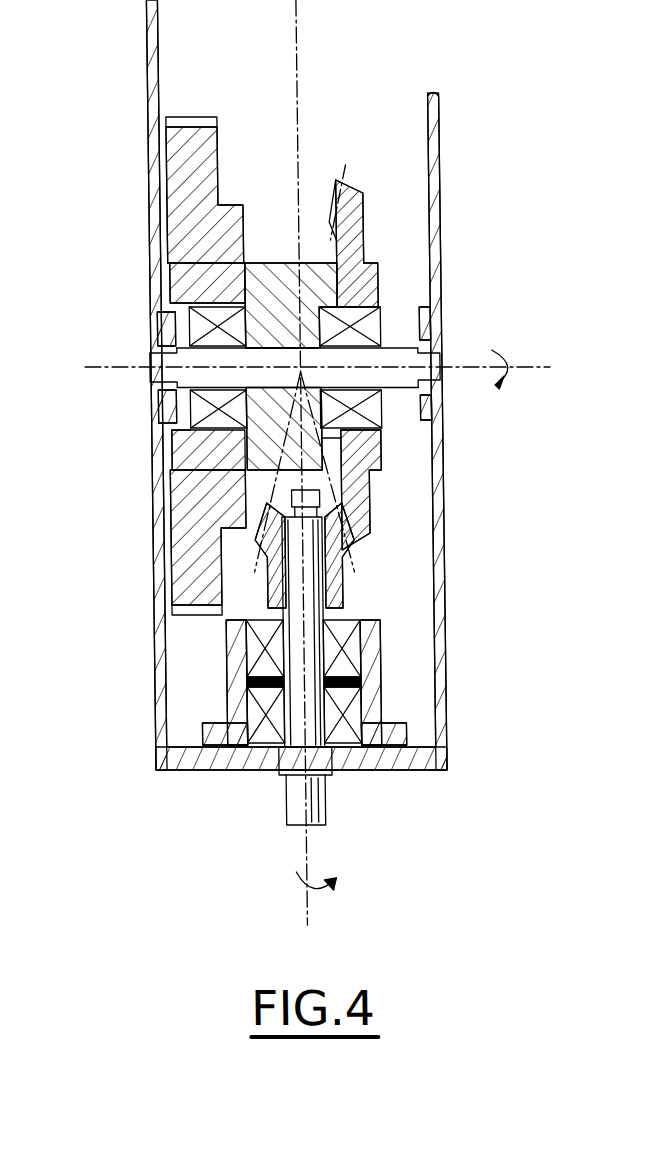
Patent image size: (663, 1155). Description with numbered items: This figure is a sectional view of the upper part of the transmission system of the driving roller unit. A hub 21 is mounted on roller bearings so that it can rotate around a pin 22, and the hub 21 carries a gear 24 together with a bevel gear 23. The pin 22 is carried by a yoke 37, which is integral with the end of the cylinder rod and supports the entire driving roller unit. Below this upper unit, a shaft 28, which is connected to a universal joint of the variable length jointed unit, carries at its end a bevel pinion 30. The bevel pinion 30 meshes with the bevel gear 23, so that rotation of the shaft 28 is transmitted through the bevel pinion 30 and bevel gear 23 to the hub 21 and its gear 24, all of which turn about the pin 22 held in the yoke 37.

The hub 21 is at (318, 290).
The pin 22 is at (392, 356).
The bevel gear 23 is at (365, 210).
The gear 24 is at (190, 183).
The shaft 28 is at (318, 596).
The bevel pinion 30 is at (336, 566).
The yoke 37 is at (157, 568).